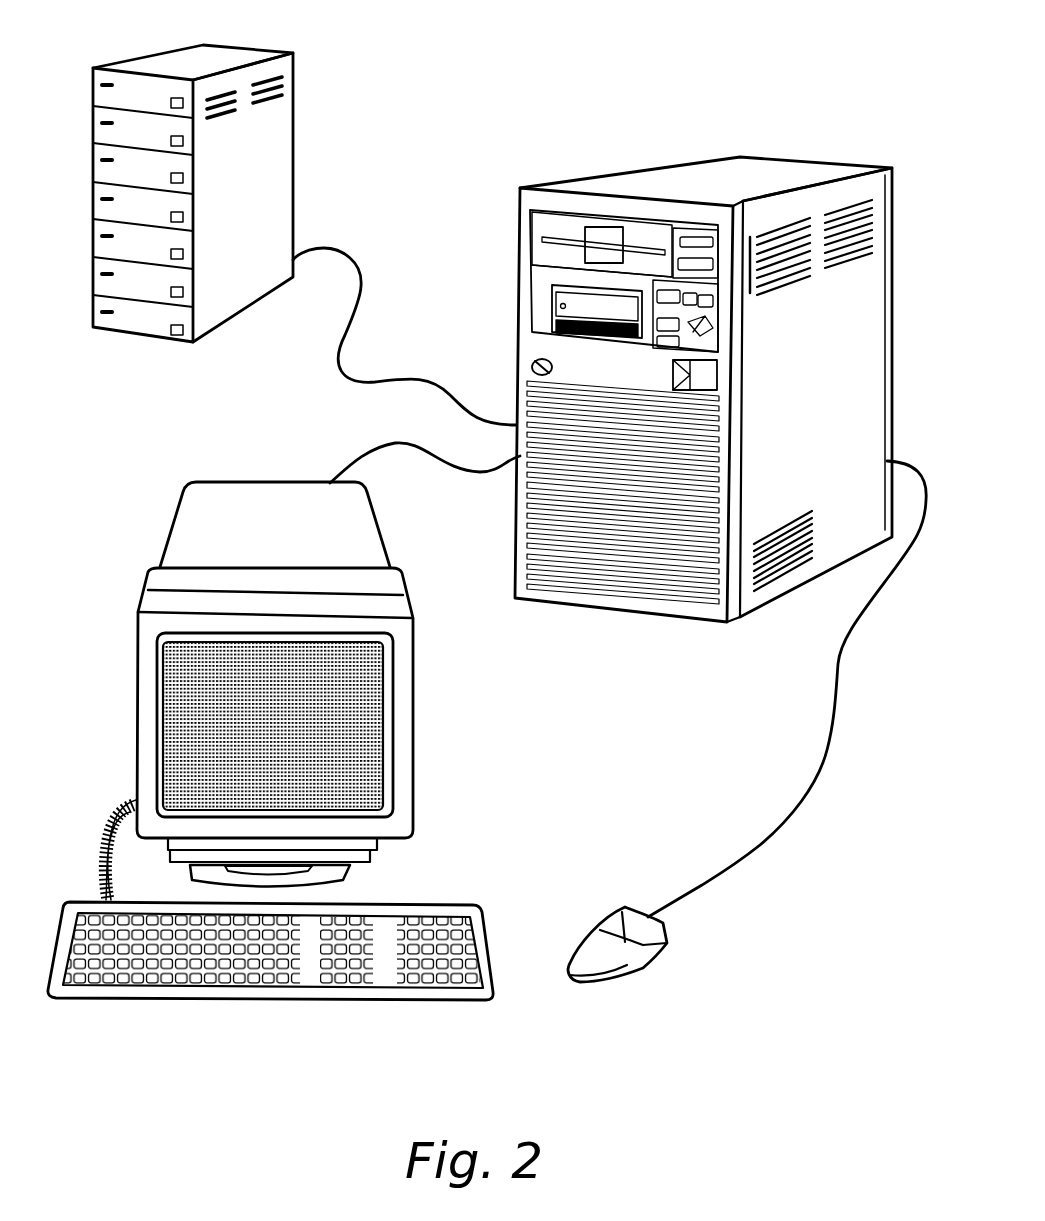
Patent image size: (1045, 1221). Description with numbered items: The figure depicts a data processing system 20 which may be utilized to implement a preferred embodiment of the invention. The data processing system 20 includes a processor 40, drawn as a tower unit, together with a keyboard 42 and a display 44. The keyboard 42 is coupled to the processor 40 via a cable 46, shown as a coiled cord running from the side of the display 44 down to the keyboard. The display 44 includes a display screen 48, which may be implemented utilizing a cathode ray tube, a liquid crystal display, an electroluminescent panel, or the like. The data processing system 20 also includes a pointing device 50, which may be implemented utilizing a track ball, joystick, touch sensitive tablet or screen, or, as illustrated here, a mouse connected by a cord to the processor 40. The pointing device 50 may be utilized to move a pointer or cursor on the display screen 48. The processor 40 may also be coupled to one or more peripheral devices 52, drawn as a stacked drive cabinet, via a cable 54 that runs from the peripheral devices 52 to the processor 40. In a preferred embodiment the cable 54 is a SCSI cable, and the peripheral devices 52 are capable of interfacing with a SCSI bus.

The data processing system 20 is at (606, 113).
The processor 40 is at (520, 340).
The keyboard 42 is at (300, 992).
The display 44 is at (290, 505).
The cable 46 is at (100, 826).
The display screen 48 is at (357, 700).
The pointing device 50 is at (623, 968).
The peripheral devices 52 is at (295, 178).
The cable 54 is at (362, 305).